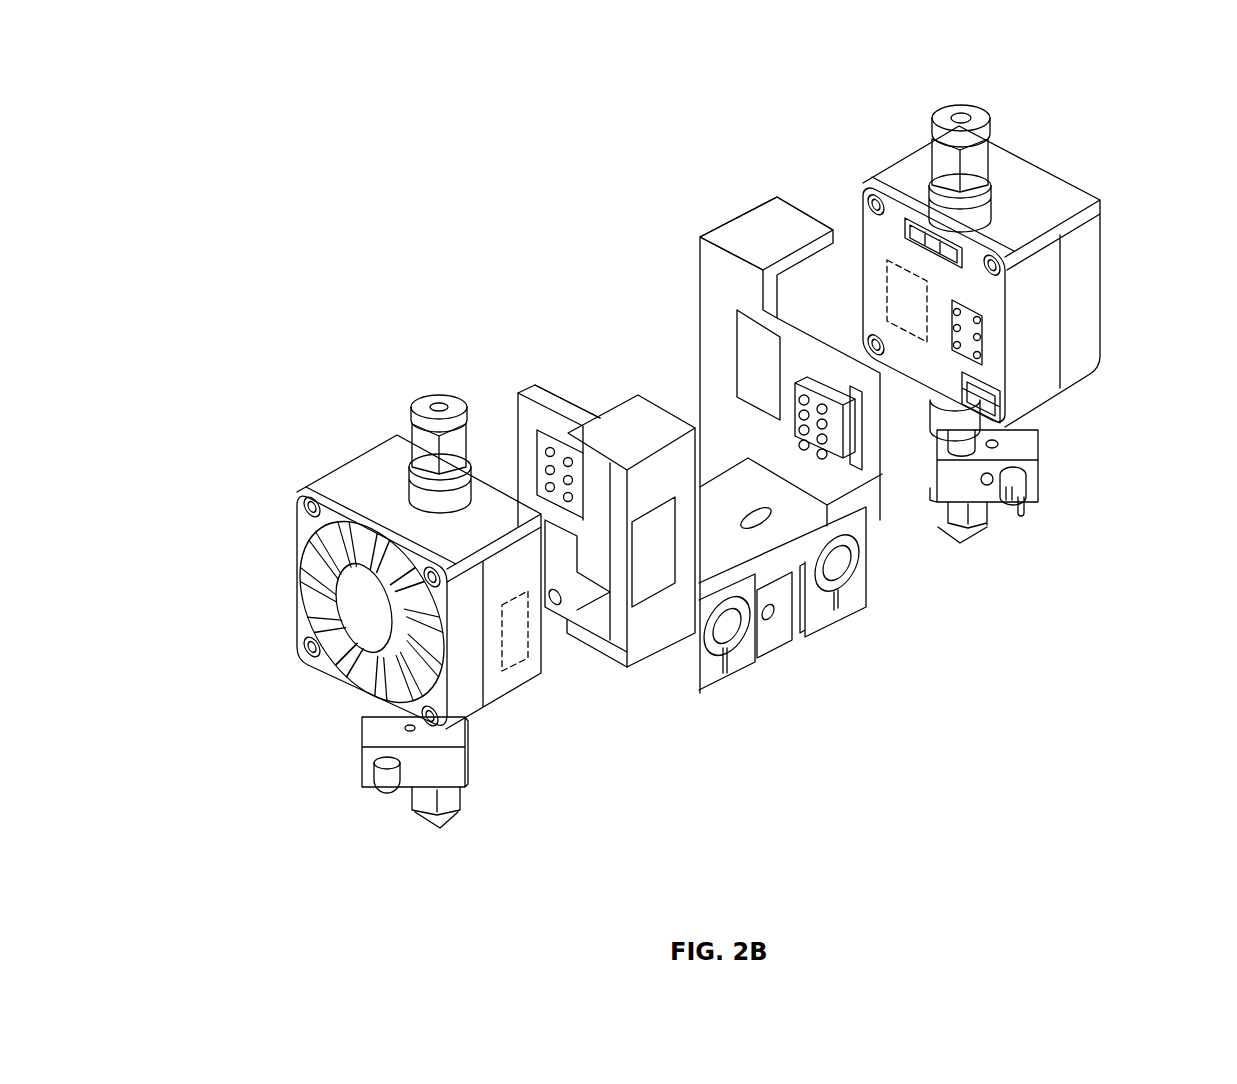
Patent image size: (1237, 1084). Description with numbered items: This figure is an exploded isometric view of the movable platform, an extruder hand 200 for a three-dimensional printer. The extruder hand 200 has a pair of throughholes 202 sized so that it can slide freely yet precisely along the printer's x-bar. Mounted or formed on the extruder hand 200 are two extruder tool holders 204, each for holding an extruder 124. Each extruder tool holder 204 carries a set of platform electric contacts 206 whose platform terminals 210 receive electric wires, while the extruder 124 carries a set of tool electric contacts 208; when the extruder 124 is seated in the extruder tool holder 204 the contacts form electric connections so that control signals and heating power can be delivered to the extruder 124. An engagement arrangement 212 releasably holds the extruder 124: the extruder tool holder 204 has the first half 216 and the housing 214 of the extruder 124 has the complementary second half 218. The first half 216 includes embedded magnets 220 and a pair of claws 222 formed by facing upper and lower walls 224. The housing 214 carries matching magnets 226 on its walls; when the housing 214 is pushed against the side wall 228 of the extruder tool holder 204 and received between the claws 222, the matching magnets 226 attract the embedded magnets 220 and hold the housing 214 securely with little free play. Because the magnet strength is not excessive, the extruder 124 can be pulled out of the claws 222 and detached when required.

The extruder 124 is at (305, 524).
The extruder hand 200 is at (803, 160).
The throughholes 202 is at (833, 556).
The extruder tool holder 204 is at (637, 650).
The platform electric contacts 206 is at (540, 452).
The tool electric contacts 208 is at (960, 338).
The platform terminals 210 is at (838, 433).
The engagement arrangement 212 is at (762, 193).
The housing 214 is at (382, 460).
The first half of the engagement arrangement 216 is at (718, 222).
The second half of the engagement arrangement 218 is at (892, 165).
The embedded magnets 220 is at (645, 576).
The claws 222 is at (590, 430).
The upper and lower walls 224 is at (642, 420).
The matching magnets 226 is at (517, 650).
The side wall 228 is at (547, 397).